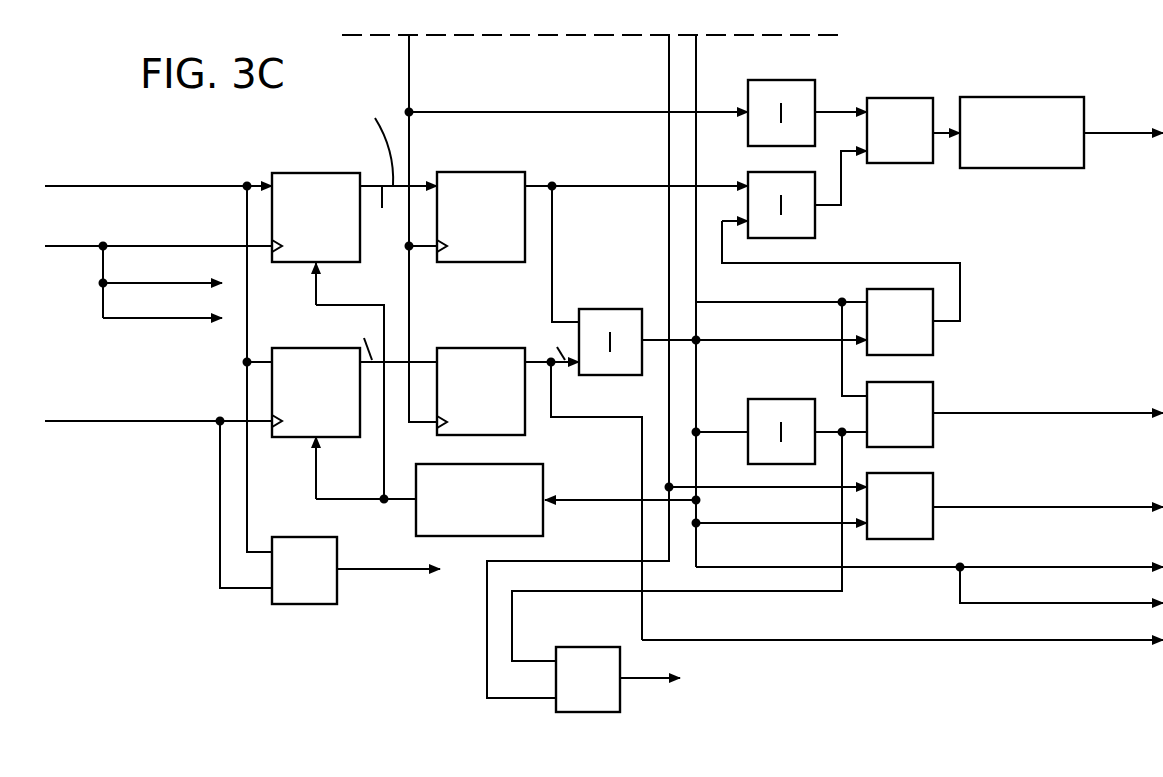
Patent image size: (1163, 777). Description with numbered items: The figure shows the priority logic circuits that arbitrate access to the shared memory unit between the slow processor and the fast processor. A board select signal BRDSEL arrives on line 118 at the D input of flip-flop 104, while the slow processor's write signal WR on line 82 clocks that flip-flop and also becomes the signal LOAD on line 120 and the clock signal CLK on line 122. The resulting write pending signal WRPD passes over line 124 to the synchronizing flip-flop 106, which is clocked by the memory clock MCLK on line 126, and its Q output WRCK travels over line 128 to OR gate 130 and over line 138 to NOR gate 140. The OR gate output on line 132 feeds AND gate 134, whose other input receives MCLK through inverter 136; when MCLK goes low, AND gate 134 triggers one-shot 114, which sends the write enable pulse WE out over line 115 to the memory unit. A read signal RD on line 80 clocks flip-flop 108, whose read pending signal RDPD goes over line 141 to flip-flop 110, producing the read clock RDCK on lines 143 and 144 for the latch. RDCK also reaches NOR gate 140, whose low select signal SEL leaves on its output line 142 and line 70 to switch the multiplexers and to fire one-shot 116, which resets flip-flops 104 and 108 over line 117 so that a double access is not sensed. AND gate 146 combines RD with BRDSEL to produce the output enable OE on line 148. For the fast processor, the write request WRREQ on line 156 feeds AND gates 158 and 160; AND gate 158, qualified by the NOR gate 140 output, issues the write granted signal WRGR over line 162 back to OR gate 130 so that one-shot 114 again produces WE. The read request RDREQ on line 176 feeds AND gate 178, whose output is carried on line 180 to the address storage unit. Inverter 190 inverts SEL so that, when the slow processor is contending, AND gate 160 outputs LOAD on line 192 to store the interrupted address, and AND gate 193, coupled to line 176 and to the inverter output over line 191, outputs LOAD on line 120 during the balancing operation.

The line 70 is at (812, 566).
The output line 80 is at (190, 421).
The output line 82 is at (210, 246).
The flip-flop 104 is at (321, 173).
The synchronizing flip-flop 106 is at (466, 172).
The flip-flop 108 is at (320, 348).
The flip-flop 110 is at (475, 348).
The one-shot 114 is at (1058, 97).
The line 115 is at (1140, 135).
The one-shot 116 is at (535, 522).
The line 117 is at (352, 283).
The line 118 is at (115, 186).
The line 120 is at (185, 283).
The line 122 is at (178, 318).
The line 124 is at (374, 166).
The line 126 is at (412, 62).
The Q output line 128 is at (645, 188).
The OR gate 130 is at (815, 221).
The line 132 is at (841, 190).
The AND gate 134 is at (882, 100).
The inverter 136 is at (780, 80).
The line 138 is at (552, 247).
The NOR gate 140 is at (625, 310).
The line 141 is at (392, 362).
The inverter output line 142 is at (717, 340).
The line 143 is at (540, 370).
The line 144 is at (780, 638).
The AND gate 146 is at (305, 604).
The line 148 is at (395, 575).
The line 156 is at (698, 48).
The AND gate 158 is at (927, 339).
The AND gate 160 is at (927, 432).
The line 162 is at (960, 274).
The output line 176 is at (669, 60).
The AND gate 178 is at (927, 527).
The dump (DUMP) line 180 is at (1103, 507).
The inverter 190 is at (790, 399).
The read request (RDREQ) line 191 is at (487, 642).
The line 192 is at (1100, 413).
The AND gate 193 is at (612, 648).